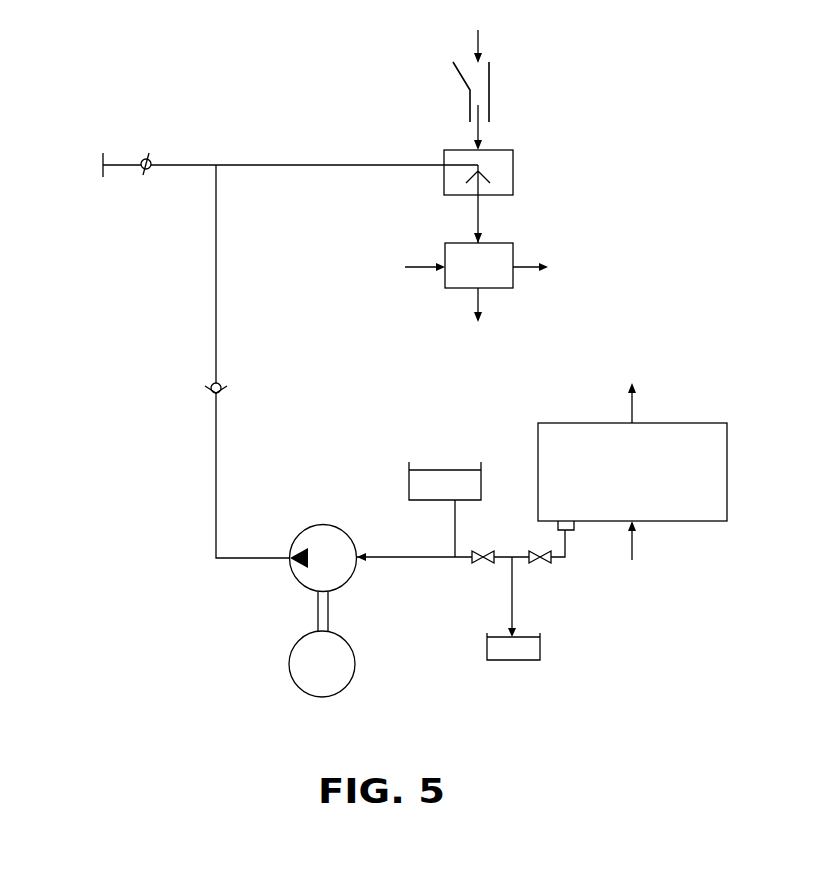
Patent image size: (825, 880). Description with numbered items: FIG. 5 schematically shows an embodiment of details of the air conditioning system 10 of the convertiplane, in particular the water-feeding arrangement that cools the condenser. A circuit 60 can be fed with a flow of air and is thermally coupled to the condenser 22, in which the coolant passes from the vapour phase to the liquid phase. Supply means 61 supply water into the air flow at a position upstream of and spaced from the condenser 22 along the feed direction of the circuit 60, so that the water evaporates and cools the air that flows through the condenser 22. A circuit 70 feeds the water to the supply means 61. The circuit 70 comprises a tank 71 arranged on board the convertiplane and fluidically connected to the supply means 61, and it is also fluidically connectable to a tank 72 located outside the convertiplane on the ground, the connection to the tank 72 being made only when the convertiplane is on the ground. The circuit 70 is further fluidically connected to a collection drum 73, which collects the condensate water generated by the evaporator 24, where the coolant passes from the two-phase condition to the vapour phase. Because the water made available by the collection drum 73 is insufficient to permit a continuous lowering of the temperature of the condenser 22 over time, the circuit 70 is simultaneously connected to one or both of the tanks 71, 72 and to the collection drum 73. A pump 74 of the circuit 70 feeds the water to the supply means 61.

The air conditioning system 10 is at (670, 132).
The circuit 70 is at (310, 130).
The circuit 60 is at (492, 48).
The supply means 61 is at (513, 160).
The condenser 22 is at (450, 278).
The tank 71 is at (440, 478).
The tank 72 is at (516, 655).
The evaporator 24 is at (717, 465).
The collection drum 73 is at (574, 527).
The pump 74 is at (300, 677).